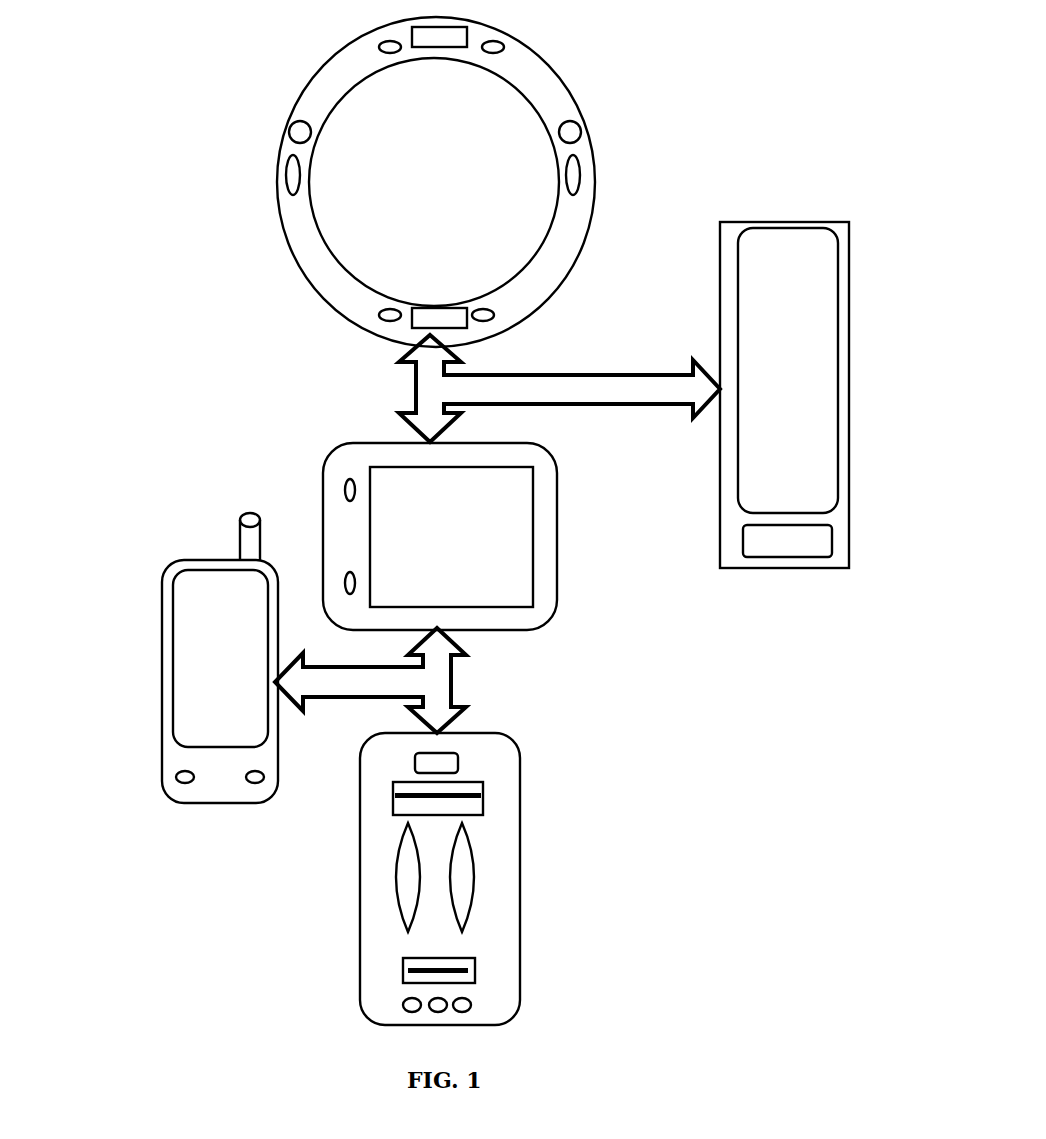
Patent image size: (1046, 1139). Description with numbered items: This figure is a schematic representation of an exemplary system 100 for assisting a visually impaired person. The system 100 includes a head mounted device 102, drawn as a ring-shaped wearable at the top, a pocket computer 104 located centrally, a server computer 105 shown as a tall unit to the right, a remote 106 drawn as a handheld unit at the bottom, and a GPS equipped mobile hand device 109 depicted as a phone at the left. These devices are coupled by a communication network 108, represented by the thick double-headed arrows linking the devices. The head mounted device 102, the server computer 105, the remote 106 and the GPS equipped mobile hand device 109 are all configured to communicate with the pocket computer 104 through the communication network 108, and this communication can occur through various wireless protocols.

The system 100 is at (736, 93).
The head mounted device 102 is at (560, 70).
The pocket computer 104 is at (557, 500).
The server computer 105 is at (850, 373).
The remote 106 is at (517, 805).
The communication network 108 is at (414, 392).
The GPS equipped mobile hand device 109 is at (158, 655).